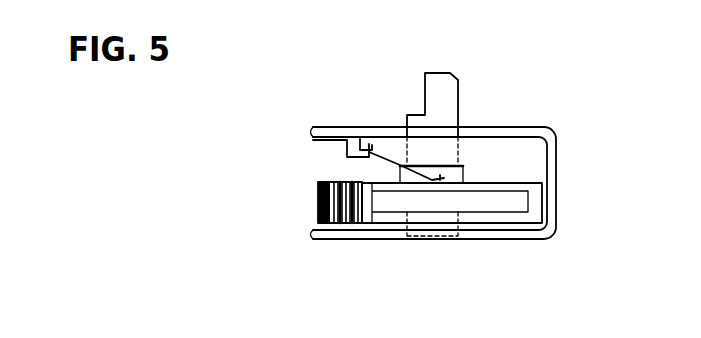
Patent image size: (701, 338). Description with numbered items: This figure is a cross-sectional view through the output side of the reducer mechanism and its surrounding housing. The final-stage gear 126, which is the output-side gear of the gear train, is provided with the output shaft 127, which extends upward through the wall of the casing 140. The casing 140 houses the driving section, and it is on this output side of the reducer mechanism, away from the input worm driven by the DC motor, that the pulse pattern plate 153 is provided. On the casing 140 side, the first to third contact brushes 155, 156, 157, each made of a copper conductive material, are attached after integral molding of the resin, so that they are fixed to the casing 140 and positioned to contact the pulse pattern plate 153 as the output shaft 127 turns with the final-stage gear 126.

The final-stage gear 126 is at (317, 202).
The output shaft 127 is at (459, 92).
The casing 140 is at (557, 164).
The pulse pattern plate 153 is at (493, 184).
The first contact brush 155 is at (377, 123).
The second contact brush 156 is at (366, 144).
The third contact brush 157 is at (386, 152).